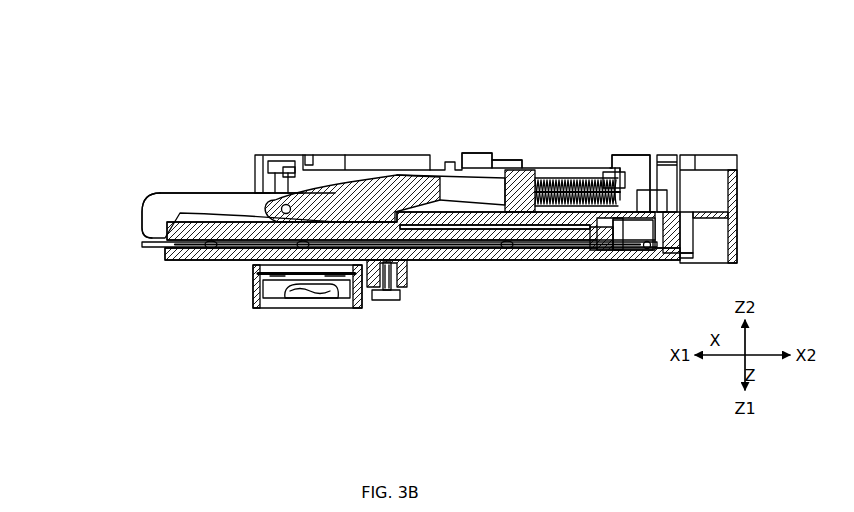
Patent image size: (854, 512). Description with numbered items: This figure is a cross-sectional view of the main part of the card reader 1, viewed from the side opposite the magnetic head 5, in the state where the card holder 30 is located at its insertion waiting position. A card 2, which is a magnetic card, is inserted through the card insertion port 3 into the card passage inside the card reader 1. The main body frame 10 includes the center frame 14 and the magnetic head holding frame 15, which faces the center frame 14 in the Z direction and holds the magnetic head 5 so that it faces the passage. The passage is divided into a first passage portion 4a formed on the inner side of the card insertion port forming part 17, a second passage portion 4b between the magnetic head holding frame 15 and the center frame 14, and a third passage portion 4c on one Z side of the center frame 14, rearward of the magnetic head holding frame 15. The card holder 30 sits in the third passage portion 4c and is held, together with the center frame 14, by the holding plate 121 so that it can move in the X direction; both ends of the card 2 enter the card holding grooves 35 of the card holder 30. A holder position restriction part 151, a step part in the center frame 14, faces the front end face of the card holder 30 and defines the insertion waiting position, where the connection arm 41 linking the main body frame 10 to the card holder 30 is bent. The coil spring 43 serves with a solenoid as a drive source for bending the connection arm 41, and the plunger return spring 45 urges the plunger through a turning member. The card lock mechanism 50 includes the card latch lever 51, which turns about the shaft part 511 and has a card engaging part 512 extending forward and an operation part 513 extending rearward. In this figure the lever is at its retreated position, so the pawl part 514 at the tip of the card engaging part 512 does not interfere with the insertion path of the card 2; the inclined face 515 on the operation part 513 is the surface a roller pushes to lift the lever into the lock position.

The card reader 1 is at (681, 67).
The card 2 is at (150, 248).
The card insertion port 3 is at (137, 255).
The first passage portion 4a is at (211, 248).
The second passage portion 4b is at (303, 248).
The third passage portion 4c is at (507, 250).
The magnetic head 5 is at (320, 300).
The main body frame 10 is at (591, 167).
The center frame 14 is at (403, 187).
The magnetic head holding frame 15 is at (350, 305).
The card insertion port forming part 17 is at (223, 262).
The card holder 30 is at (613, 248).
The card holding grooves 35 is at (573, 238).
The connection arm 41 is at (662, 190).
The coil spring 43 is at (573, 178).
The plunger return spring 45 is at (577, 208).
The card lock mechanism 50 is at (443, 160).
The card latch lever 51 is at (288, 173).
The holding plate 121 is at (630, 253).
The holder position restriction part 151 is at (398, 238).
The shaft part 511 is at (264, 190).
The card engaging part 512 is at (223, 200).
The operation part 513 is at (479, 166).
The pawl part 514 is at (142, 235).
The inclined face 515 is at (520, 172).